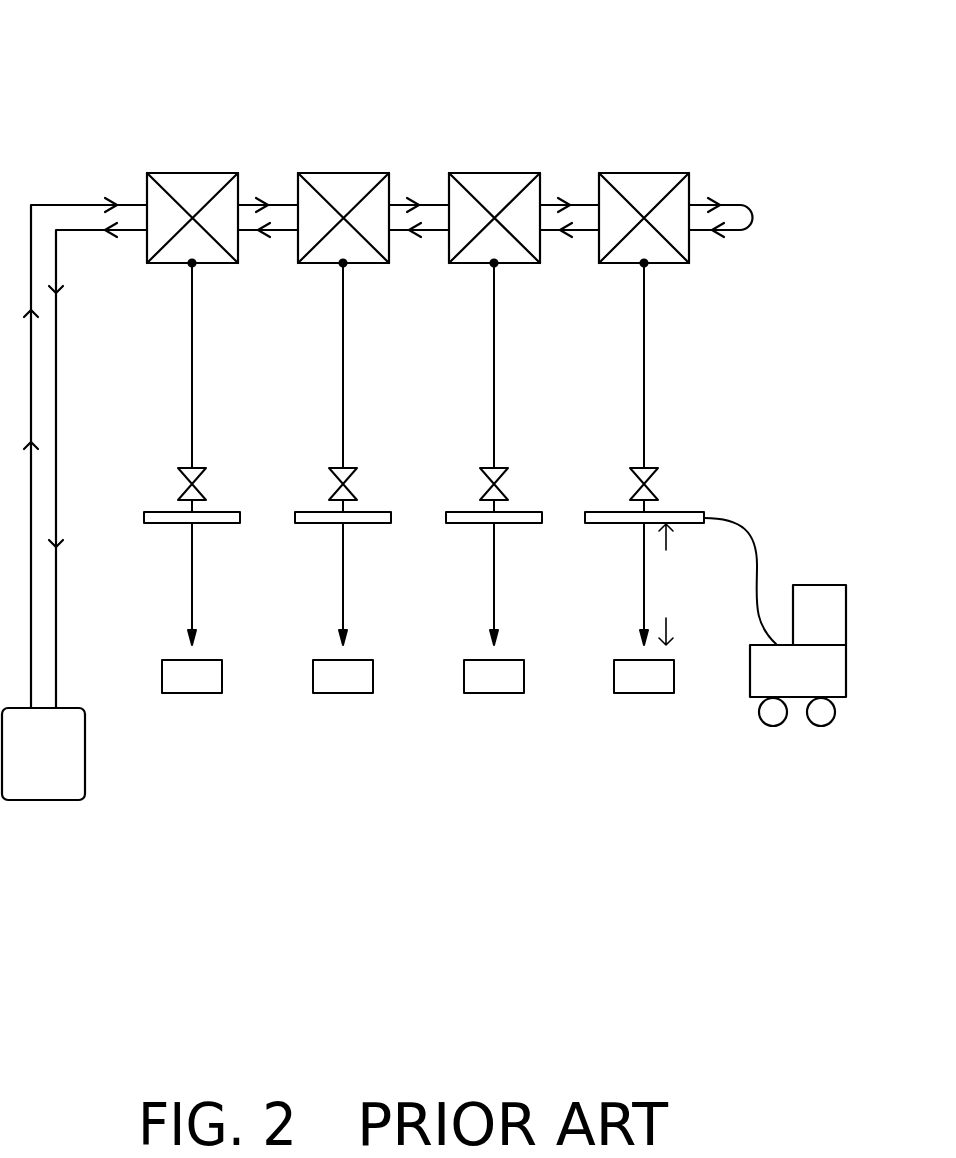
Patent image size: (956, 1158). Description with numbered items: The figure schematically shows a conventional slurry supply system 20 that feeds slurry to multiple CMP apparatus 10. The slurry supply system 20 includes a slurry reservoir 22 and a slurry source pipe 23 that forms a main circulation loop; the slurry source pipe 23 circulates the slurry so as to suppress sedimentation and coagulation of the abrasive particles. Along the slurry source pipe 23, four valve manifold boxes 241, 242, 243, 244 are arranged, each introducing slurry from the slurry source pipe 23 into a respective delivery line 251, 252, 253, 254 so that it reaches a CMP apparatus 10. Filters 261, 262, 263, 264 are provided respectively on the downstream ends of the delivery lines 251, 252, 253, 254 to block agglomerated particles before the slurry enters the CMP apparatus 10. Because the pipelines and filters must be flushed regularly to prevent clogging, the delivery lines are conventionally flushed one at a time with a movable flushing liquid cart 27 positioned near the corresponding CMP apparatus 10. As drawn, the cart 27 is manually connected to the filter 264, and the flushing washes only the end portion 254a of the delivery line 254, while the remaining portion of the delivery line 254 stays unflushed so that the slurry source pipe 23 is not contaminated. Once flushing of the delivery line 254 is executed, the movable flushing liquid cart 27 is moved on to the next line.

The slurry supply system 20 is at (70, 48).
The slurry reservoir 22 is at (85, 744).
The slurry source pipe 23 is at (741, 207).
The movable flushing liquid cart 27 is at (813, 585).
The valve manifold box 241 is at (192, 203).
The valve manifold box 242 is at (343, 203).
The valve manifold box 243 is at (494, 203).
The valve manifold box 244 is at (644, 203).
The delivery line 251 is at (192, 363).
The delivery line 252 is at (343, 363).
The delivery line 253 is at (494, 363).
The delivery line 254 is at (644, 363).
The end portion of the delivery line 254a is at (686, 584).
The filter 261 is at (212, 512).
The filter 262 is at (363, 512).
The filter 263 is at (514, 512).
The filter 264 is at (664, 512).
The CMP apparatus 10 is at (418, 676).